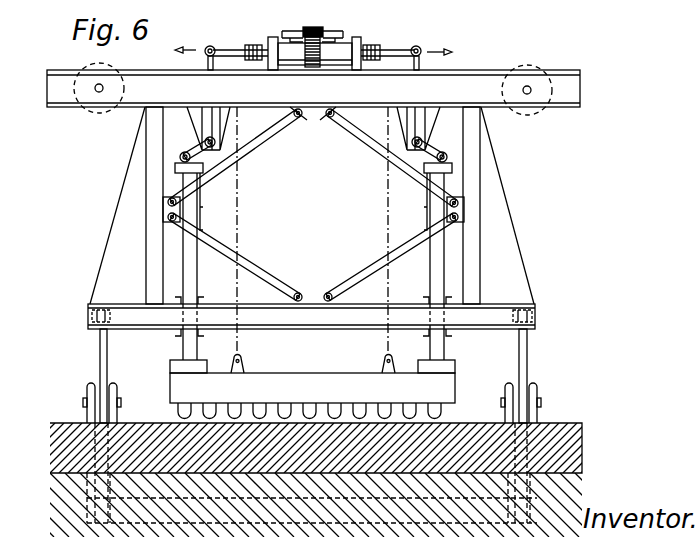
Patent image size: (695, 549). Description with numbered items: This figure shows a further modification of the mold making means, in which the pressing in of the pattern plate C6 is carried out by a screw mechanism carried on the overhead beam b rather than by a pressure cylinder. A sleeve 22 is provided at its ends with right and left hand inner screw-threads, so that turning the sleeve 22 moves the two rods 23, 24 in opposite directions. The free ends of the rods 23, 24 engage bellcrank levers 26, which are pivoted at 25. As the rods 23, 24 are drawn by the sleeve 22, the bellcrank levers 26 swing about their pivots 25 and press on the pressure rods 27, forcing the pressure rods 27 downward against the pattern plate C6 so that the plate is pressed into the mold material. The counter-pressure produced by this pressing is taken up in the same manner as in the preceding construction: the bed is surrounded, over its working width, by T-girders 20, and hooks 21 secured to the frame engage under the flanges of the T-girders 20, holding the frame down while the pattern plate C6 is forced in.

The overhead beam b is at (313, 89).
The T-girder 20 is at (88, 413).
The hook 21 is at (100, 352).
The sleeve 22 is at (333, 52).
The rod 23 is at (224, 49).
The rod 24 is at (393, 49).
The pivot 25 is at (397, 158).
The bellcrank lever 26 is at (207, 66).
The pressure rod 27 is at (190, 287).
The pattern plate C6 is at (312, 387).